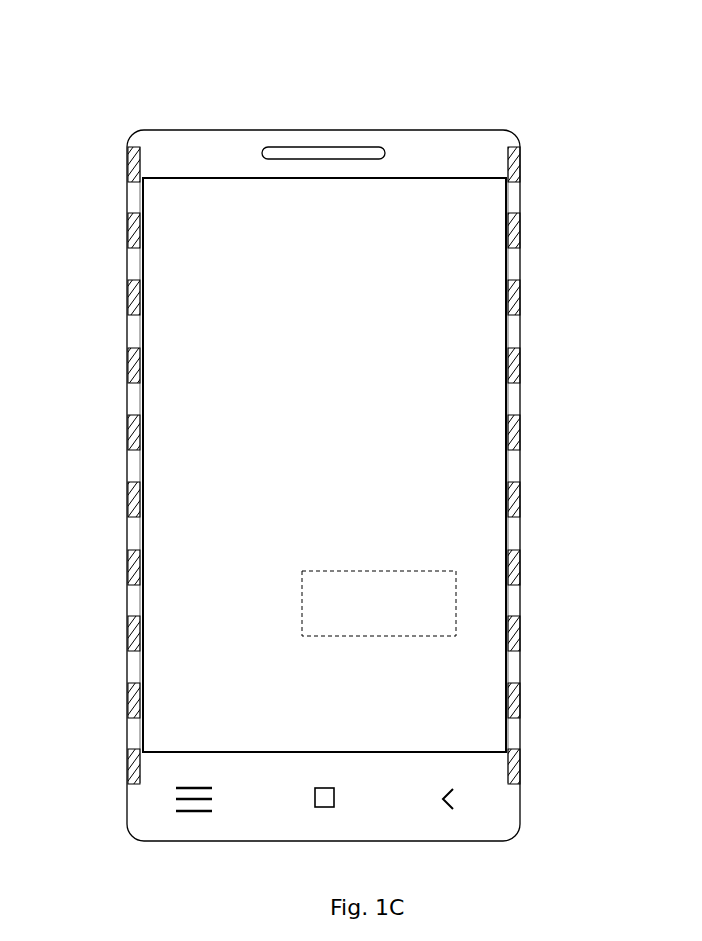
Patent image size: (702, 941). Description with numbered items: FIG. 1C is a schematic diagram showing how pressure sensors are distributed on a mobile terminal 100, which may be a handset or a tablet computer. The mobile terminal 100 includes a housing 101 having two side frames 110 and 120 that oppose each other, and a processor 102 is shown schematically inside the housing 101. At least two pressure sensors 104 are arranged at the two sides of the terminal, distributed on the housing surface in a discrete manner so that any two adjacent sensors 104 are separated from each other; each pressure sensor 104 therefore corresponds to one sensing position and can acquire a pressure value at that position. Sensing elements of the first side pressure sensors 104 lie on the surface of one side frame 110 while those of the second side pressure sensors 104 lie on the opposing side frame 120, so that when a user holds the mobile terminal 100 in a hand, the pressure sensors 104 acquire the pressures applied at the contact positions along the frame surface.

The mobile terminal 100 is at (363, 36).
The housing 101 is at (472, 130).
The processor 102 is at (379, 603).
The pressure sensors 104 is at (128, 298).
The side frame 110 is at (520, 205).
The side frame 120 is at (130, 207).